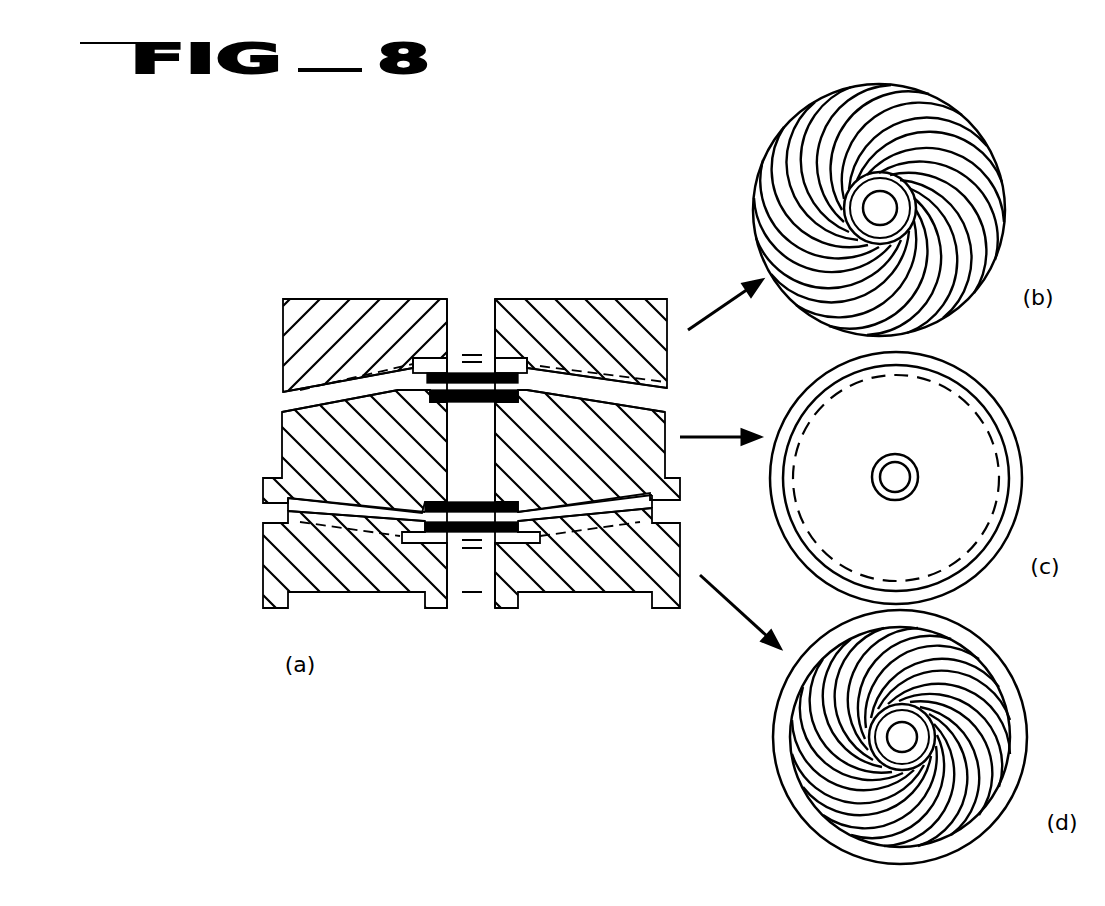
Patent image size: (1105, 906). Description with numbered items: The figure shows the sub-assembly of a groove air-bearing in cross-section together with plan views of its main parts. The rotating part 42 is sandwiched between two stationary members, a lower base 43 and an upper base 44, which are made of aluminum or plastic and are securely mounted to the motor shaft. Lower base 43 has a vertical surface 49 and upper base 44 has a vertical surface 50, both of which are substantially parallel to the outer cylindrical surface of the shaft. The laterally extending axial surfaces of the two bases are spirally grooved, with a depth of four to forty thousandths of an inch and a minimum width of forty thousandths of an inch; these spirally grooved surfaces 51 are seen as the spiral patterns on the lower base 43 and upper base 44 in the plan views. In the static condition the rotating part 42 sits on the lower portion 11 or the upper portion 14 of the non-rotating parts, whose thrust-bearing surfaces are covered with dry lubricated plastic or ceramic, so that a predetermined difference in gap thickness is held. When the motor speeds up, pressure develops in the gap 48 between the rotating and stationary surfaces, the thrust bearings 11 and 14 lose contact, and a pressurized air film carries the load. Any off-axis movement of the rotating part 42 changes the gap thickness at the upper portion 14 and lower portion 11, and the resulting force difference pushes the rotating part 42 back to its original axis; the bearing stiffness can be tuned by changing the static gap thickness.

The lower portion thrust bearing 11 is at (513, 530).
The upper portion thrust bearing 14 is at (504, 362).
The rotating part 42 is at (313, 437).
The lower base 43 is at (360, 573).
The upper base 44 is at (308, 312).
The gap 48 is at (618, 393).
The vertical surface 49 is at (508, 553).
The vertical surface 50 is at (546, 386).
The spirally grooved surfaces 51 is at (388, 362).